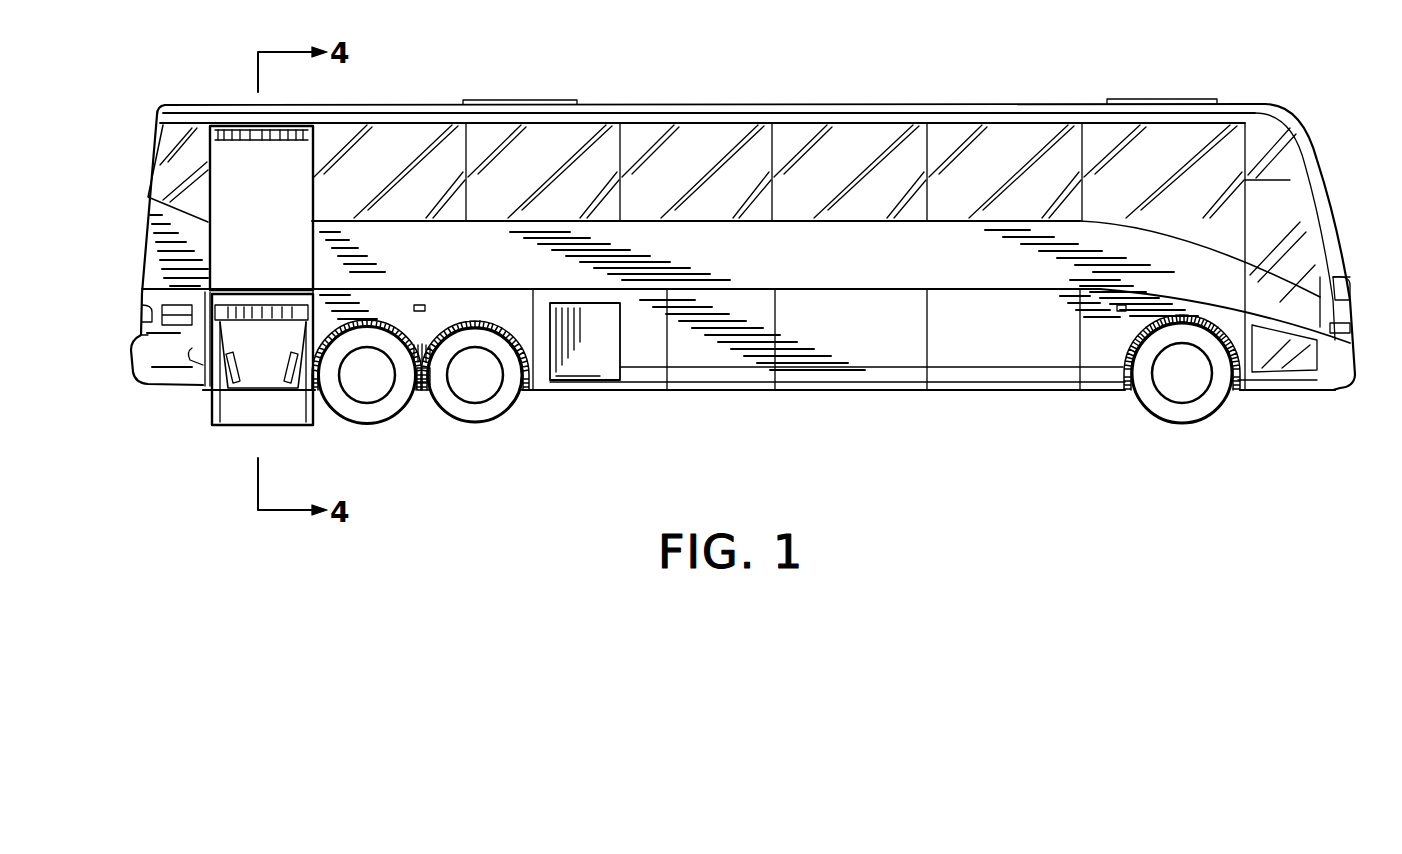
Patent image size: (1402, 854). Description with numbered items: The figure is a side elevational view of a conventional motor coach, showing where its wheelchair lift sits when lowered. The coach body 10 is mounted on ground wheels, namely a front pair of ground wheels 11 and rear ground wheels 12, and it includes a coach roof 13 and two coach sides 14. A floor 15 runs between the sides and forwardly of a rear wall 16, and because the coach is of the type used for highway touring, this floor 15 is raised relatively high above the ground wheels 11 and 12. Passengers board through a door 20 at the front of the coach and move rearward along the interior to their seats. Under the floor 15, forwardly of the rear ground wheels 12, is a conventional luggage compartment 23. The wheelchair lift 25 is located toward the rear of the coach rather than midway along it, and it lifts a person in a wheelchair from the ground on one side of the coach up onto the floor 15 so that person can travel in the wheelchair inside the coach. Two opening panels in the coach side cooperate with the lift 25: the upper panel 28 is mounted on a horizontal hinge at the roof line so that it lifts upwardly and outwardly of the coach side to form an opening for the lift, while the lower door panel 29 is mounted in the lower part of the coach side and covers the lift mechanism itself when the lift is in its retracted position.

The coach body 10 is at (828, 104).
The front pair of ground wheels 11 is at (1141, 410).
The rear ground wheels 12 is at (453, 428).
The coach roof 13 is at (637, 102).
The coach sides 14 is at (967, 228).
The floor 15 is at (282, 278).
The rear wall 16 is at (142, 258).
The door 20 is at (148, 384).
The luggage compartment 23 is at (868, 345).
The wheelchair lift 25 is at (243, 428).
The opening panel 28 is at (227, 126).
The door panel 29 is at (203, 349).